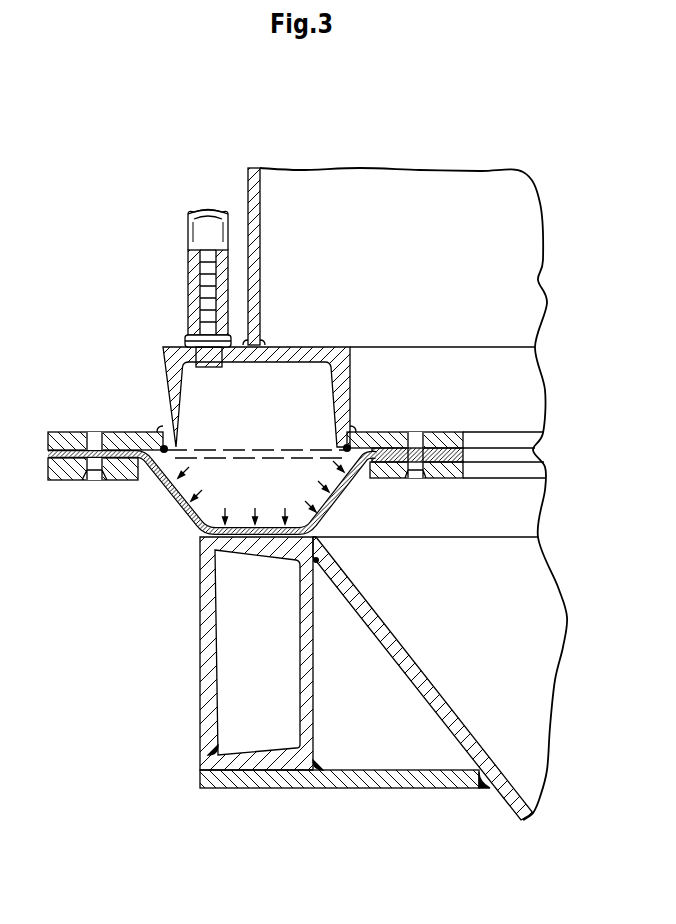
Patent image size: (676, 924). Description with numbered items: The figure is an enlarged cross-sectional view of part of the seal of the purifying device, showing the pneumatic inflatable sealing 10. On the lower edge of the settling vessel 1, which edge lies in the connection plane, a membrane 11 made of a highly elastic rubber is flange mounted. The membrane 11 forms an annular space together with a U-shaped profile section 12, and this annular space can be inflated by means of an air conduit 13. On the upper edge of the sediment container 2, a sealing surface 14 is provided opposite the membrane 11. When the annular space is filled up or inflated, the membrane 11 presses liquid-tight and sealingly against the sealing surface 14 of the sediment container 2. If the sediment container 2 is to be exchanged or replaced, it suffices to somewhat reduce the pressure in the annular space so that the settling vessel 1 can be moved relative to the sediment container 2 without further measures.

The settling vessel 1 is at (248, 171).
The sediment container 2 is at (547, 622).
The pneumatic inflatable sealing 10 is at (182, 531).
The membrane 11 is at (160, 481).
The U-shaped profile section 12 is at (163, 370).
The air conduit 13 is at (188, 285).
The sealing surface 14 is at (212, 580).